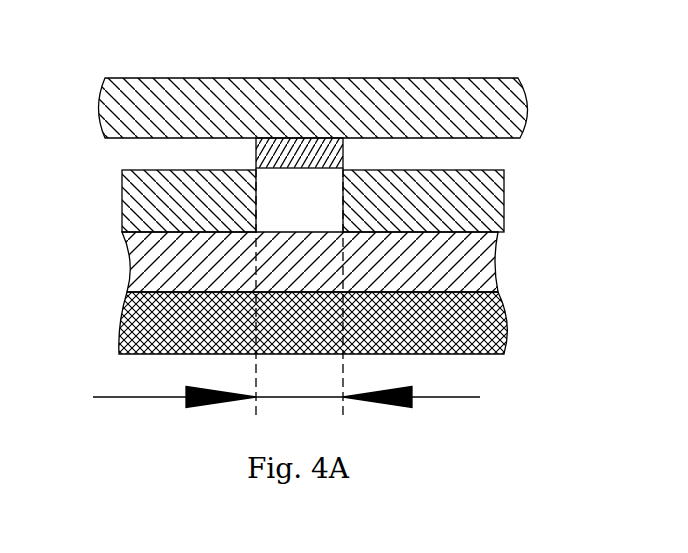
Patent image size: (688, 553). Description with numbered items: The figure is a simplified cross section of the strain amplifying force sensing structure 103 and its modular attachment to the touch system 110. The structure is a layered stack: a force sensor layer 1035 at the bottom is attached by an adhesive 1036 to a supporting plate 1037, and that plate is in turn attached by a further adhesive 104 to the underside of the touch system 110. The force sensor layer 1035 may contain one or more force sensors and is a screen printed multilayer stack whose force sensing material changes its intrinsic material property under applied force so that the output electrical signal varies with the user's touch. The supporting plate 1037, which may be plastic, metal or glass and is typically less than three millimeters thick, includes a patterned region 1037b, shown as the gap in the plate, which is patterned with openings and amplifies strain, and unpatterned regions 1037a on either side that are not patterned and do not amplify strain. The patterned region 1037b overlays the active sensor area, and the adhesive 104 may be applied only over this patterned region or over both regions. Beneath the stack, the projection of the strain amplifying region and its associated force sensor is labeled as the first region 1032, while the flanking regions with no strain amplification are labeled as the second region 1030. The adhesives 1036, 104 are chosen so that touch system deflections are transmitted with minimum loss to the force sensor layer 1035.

The touch system 110 is at (515, 93).
The adhesive 104 is at (343, 155).
The strain amplifying force sensing structure 103 is at (302, 191).
The supporting plate 1037 is at (352, 130).
The unpatterned region 1037a is at (165, 185).
The patterned region 1037b is at (293, 185).
The adhesive 1036 is at (485, 262).
The force sensor layer 1035 is at (488, 318).
The second region 1030 is at (286, 390).
The first region 1032 is at (299, 293).